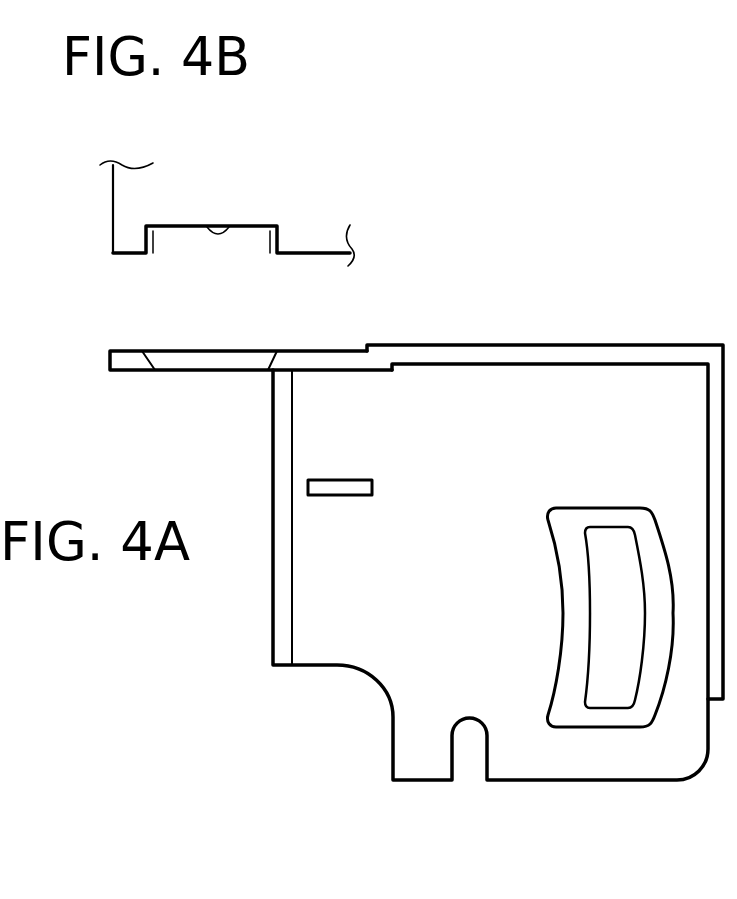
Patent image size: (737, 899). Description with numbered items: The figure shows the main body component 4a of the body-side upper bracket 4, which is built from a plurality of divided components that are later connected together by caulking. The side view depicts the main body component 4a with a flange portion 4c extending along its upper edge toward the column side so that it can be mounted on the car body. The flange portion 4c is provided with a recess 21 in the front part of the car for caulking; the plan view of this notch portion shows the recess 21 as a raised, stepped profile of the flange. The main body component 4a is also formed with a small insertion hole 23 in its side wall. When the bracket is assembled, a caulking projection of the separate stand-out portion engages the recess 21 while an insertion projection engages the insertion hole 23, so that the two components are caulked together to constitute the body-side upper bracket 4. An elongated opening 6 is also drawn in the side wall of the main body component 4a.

In FIG. 4A, the body-side upper bracket 4 is at (345, 763).
In FIG. 4A, the main body component 4a is at (560, 770).
In FIG. 4A, the flange portion 4c is at (524, 345).
In FIG. 4A, the elongated slot / hole 6 is at (643, 657).
In FIG. 4B, the recess 21 is at (228, 226).
In FIG. 4A, the recess 21 is at (199, 364).
In FIG. 4A, the insertion hole 23 is at (345, 495).